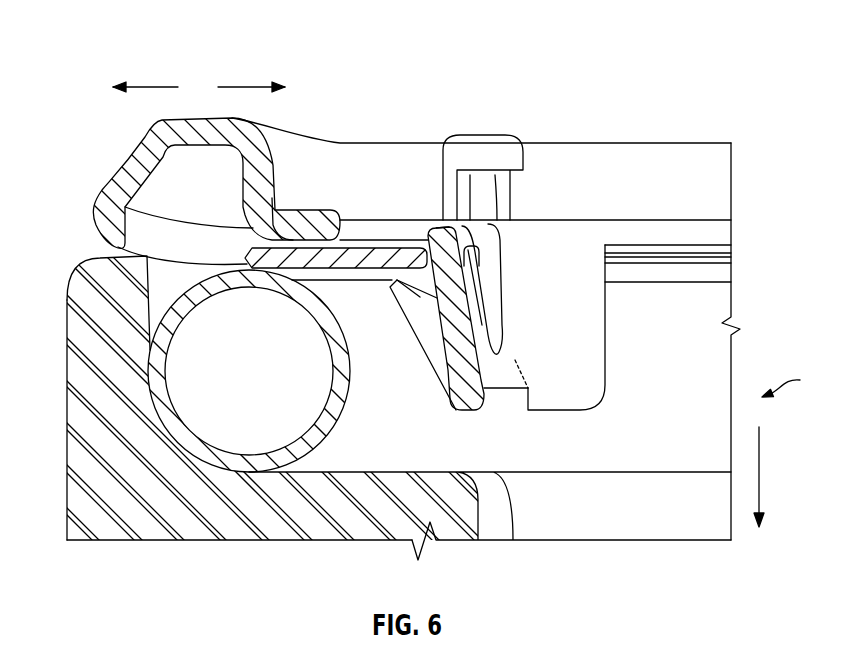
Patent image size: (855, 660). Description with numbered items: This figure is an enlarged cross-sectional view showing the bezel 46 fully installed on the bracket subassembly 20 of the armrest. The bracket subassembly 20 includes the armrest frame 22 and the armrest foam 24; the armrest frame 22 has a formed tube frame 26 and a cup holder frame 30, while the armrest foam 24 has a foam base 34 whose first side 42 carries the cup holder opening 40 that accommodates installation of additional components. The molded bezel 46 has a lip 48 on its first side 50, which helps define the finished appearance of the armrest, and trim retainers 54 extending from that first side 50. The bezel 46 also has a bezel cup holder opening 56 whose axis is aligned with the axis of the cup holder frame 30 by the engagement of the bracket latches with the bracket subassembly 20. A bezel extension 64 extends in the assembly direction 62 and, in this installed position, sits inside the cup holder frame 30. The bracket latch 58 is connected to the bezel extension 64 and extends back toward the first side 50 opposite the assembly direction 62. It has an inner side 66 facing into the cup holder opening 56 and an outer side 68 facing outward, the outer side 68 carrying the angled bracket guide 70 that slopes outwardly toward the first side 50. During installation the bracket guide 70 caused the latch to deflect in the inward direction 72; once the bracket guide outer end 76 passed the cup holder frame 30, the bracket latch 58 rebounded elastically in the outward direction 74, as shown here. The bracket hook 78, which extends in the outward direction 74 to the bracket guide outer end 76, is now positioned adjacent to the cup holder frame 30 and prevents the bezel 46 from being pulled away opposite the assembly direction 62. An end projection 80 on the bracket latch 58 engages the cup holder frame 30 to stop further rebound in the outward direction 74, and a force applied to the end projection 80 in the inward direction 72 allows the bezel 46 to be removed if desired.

The bracket subassembly 20 is at (799, 382).
The armrest frame 22 is at (715, 377).
The armrest foam 24 is at (75, 455).
The formed tube frame 26 is at (245, 463).
The cup holder frame 30 is at (260, 255).
The foam base 34 is at (147, 527).
The cup holder opening 40 is at (640, 520).
The first side 42 is at (78, 282).
The bezel 46 is at (713, 176).
The lip 48 is at (102, 188).
The first side 50 is at (630, 143).
The trim retainers 54 is at (485, 135).
The bezel cup holder opening 56 is at (718, 228).
The bracket latch 58 is at (473, 307).
The assembly direction 62 is at (759, 465).
The bezel extension 64 is at (593, 320).
The inner side 66 is at (482, 325).
The outer side 68 is at (445, 372).
The bracket guide 70 is at (418, 343).
The inward direction 72 is at (253, 86).
The outward direction 74 is at (148, 86).
The bracket guide outer end 76 is at (390, 288).
The bracket hook 78 is at (408, 266).
The end projection 80 is at (437, 225).